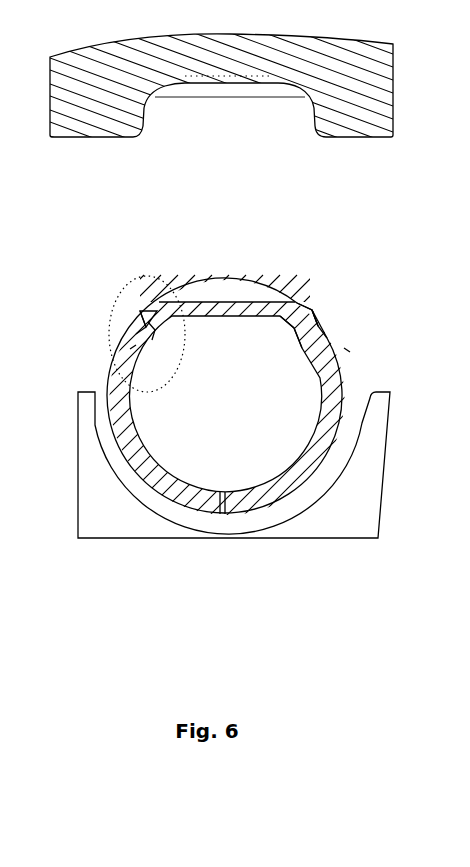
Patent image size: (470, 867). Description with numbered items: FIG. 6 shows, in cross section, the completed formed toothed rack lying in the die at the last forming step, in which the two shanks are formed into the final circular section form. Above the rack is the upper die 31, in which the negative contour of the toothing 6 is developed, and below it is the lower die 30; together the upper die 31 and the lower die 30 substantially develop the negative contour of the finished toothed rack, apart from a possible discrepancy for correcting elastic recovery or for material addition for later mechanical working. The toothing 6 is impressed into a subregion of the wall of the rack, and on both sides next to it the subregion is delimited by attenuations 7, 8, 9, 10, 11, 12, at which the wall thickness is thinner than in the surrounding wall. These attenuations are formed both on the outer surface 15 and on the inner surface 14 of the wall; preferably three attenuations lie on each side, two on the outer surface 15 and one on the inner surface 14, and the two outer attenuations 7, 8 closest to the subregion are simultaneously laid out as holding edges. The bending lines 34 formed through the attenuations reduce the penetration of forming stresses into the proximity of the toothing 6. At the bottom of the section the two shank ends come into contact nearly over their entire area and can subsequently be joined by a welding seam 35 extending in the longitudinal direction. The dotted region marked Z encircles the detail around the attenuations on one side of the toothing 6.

The upper die 31 is at (208, 63).
The detail region Z is at (150, 305).
The toothing 6 is at (224, 301).
The attenuation 7 is at (305, 305).
The attenuation 8 is at (148, 312).
The attenuation 9 is at (330, 332).
The attenuation 10 is at (127, 333).
The attenuation 11 is at (298, 325).
The attenuation 12 is at (153, 332).
The inner surface 14 is at (290, 462).
The outer surface 15 is at (323, 465).
The lower die 30 is at (97, 520).
The bending lines 34 is at (138, 312).
The welding seam 35 is at (237, 513).